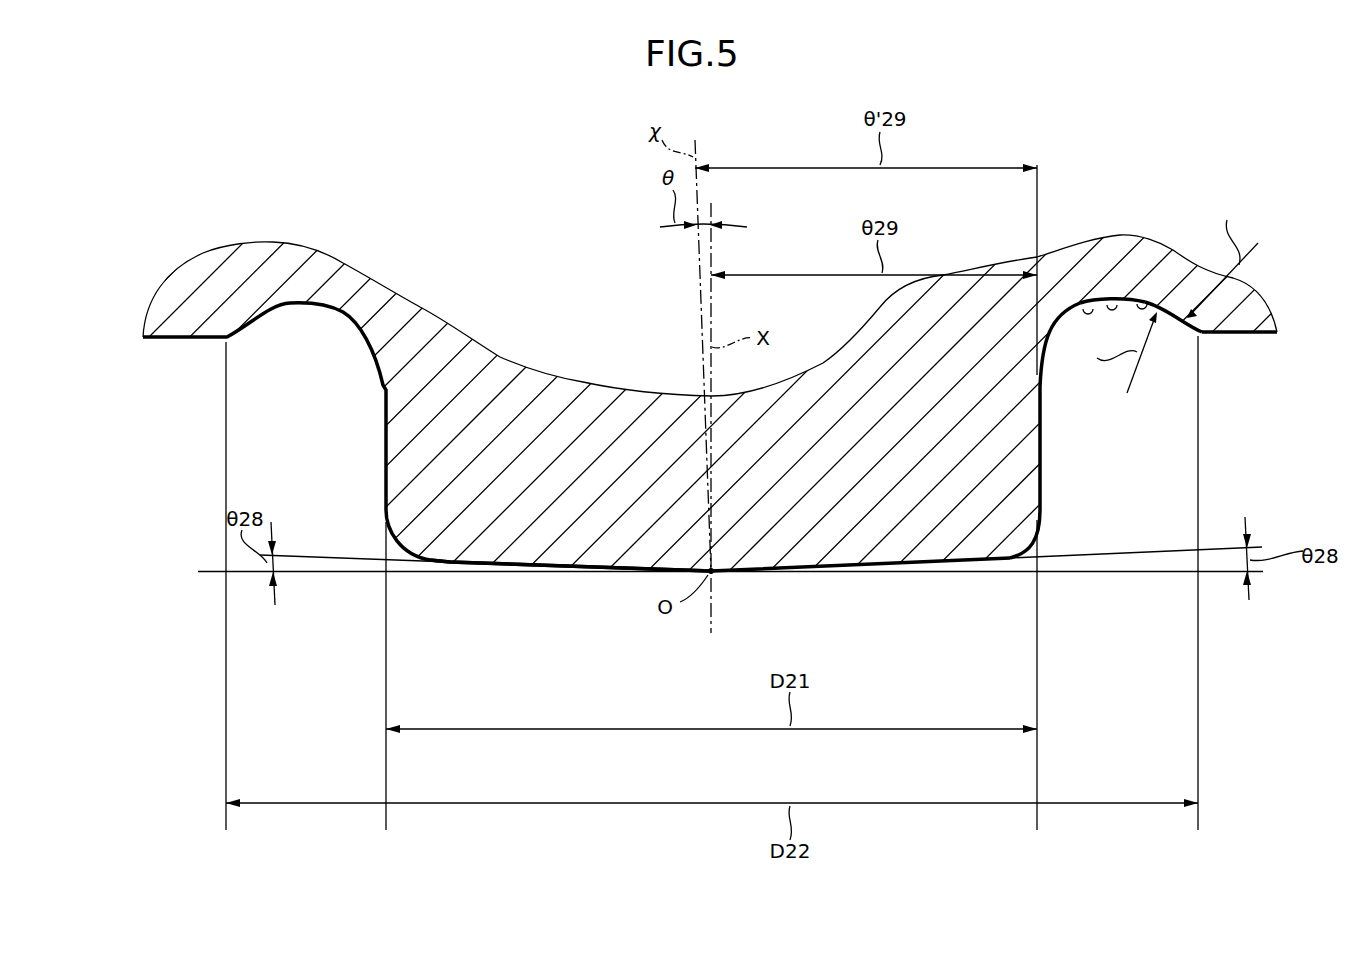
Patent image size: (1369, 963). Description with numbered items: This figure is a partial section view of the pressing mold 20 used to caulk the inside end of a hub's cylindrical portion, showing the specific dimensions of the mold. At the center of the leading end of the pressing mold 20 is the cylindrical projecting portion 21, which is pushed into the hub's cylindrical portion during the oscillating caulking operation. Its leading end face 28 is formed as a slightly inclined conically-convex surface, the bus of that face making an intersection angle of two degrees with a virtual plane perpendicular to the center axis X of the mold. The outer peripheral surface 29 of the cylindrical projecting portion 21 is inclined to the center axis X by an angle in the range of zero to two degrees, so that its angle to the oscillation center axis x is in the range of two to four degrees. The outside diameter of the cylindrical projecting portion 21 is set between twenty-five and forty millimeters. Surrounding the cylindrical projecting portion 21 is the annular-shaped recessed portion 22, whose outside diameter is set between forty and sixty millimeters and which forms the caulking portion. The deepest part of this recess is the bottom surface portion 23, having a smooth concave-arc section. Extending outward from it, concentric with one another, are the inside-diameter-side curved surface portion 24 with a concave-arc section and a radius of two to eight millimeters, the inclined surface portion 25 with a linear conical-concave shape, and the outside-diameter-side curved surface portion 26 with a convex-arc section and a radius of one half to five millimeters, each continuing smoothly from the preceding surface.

The pressing mold 20 is at (583, 393).
The cylindrical projecting portion 21 is at (893, 542).
The annular-shaped recessed portion 22 is at (1083, 303).
The bottom surface portion 23 is at (1107, 300).
The inside-diameter-side curved surface portion 24 is at (1140, 299).
The inclined surface portion 25 is at (1167, 314).
The outside-diameter-side curved surface portion 26 is at (1200, 338).
The leading end face 28 is at (480, 567).
The outer peripheral surface 29 is at (1043, 468).